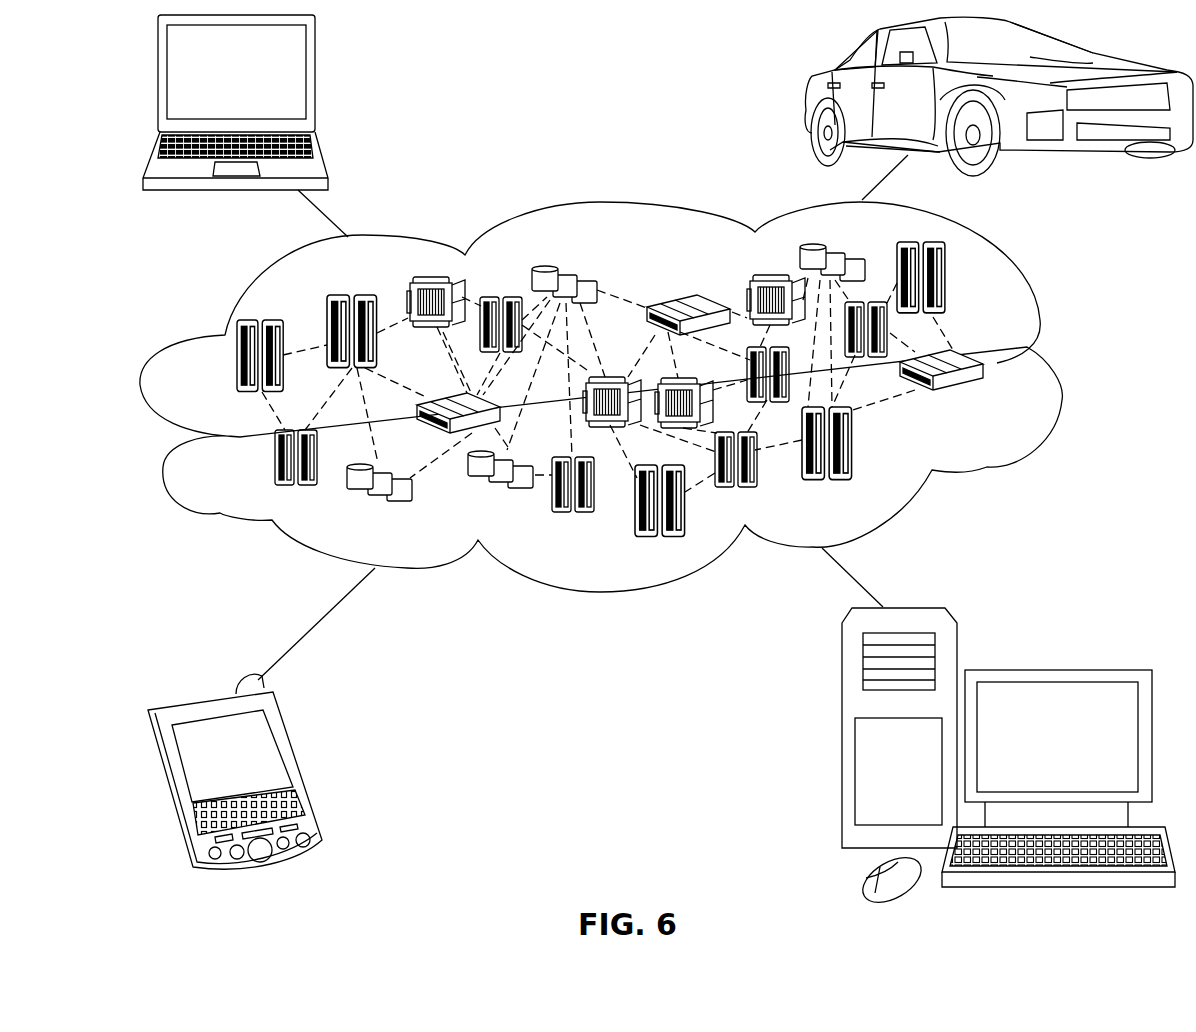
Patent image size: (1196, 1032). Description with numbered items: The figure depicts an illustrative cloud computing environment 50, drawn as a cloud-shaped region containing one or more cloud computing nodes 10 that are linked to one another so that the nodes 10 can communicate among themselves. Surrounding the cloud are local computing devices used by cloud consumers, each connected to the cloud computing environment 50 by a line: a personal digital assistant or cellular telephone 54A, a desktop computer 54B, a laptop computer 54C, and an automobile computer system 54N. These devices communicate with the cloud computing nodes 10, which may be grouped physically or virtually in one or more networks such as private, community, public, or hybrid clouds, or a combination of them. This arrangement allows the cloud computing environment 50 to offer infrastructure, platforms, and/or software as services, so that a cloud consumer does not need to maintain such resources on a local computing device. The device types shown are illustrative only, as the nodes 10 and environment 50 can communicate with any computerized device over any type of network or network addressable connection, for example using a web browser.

The cloud computing node 10 is at (988, 397).
The cloud computing environment 50 is at (1053, 368).
The personal digital assistant (PDA) or cellular telephone 54A is at (303, 767).
The desktop computer 54B is at (1053, 668).
The laptop computer 54C is at (315, 82).
The automobile computer system 54N is at (807, 97).